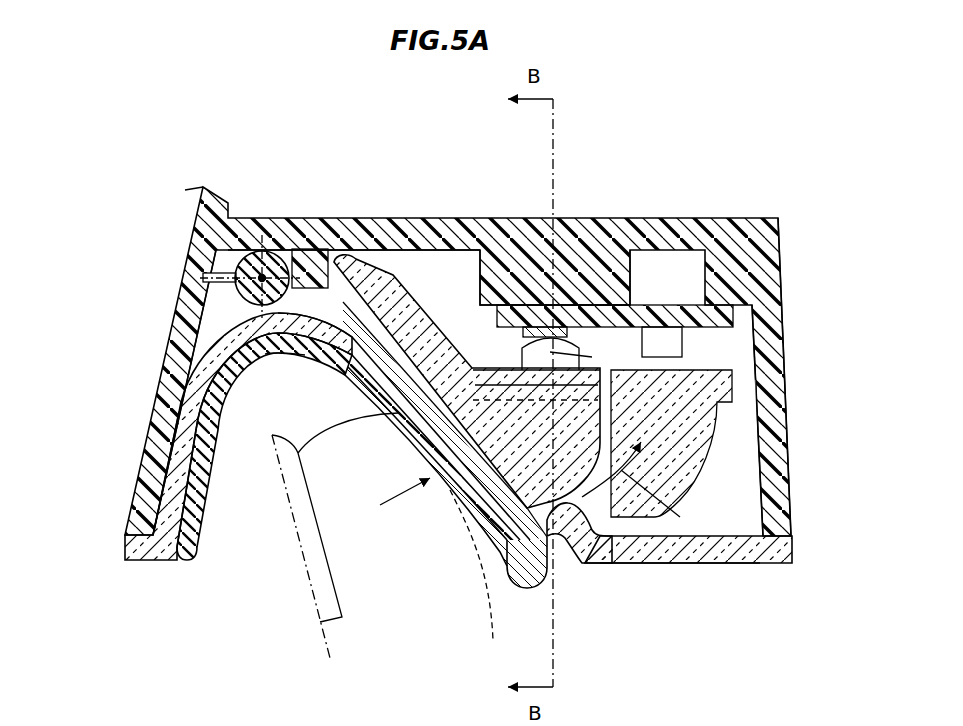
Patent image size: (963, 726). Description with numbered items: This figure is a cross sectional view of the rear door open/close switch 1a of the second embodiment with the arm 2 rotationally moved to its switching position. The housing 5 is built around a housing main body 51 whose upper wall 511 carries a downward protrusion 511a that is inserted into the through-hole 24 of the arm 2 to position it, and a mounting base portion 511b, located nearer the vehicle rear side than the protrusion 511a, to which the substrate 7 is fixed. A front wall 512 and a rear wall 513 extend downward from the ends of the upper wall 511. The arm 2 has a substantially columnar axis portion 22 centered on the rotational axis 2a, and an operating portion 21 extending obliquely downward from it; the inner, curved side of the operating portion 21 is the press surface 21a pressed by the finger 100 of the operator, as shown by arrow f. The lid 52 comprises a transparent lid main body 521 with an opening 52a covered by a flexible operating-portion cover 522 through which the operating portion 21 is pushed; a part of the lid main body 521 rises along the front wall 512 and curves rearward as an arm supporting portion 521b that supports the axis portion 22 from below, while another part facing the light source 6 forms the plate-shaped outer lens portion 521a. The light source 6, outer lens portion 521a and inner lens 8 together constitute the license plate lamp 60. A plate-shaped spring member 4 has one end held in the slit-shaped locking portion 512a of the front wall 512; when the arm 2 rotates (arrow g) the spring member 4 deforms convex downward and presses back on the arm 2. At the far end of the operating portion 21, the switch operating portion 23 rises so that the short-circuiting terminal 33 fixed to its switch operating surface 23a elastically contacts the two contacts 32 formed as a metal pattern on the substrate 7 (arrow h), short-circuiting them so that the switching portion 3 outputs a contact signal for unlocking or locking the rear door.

The rear door open/close switch 1a is at (362, 142).
The arm 2 is at (409, 280).
The rotational axis 2a is at (238, 262).
The switching portion 3 is at (590, 333).
The spring member 4 is at (318, 289).
The housing 5 is at (777, 220).
The light source 6 is at (672, 345).
The substrate 7 is at (737, 312).
The inner lens 8 is at (683, 480).
The operating portion 21 is at (440, 445).
The press surface 21a is at (435, 420).
The axis portion 22 is at (263, 250).
The switch operating portion 23 is at (480, 366).
The switch operating surface 23a is at (510, 370).
The through-hole 24 is at (287, 358).
The contacts 32 is at (549, 330).
The short-circuiting terminal 33 is at (572, 345).
The housing main body 51 is at (775, 520).
The lid 52 is at (783, 547).
The opening 52a is at (343, 373).
The license plate lamp 60 is at (747, 397).
The finger 100 is at (333, 640).
The upper wall 511 is at (365, 235).
The protrusion 511a is at (318, 257).
The mounting base portion 511b is at (567, 297).
The front wall 512 is at (173, 493).
The locking portion 512a is at (205, 276).
The rear wall 513 is at (790, 483).
The lid main body 521 is at (682, 563).
The outer lens portion 521a is at (638, 563).
The arm supporting portion 521b is at (200, 465).
The operating-portion cover 522 is at (452, 493).